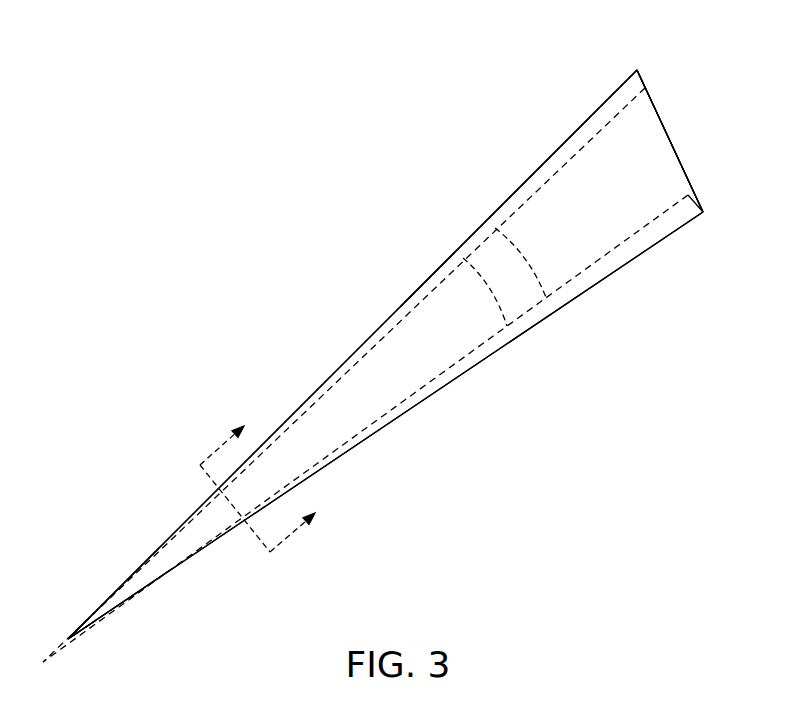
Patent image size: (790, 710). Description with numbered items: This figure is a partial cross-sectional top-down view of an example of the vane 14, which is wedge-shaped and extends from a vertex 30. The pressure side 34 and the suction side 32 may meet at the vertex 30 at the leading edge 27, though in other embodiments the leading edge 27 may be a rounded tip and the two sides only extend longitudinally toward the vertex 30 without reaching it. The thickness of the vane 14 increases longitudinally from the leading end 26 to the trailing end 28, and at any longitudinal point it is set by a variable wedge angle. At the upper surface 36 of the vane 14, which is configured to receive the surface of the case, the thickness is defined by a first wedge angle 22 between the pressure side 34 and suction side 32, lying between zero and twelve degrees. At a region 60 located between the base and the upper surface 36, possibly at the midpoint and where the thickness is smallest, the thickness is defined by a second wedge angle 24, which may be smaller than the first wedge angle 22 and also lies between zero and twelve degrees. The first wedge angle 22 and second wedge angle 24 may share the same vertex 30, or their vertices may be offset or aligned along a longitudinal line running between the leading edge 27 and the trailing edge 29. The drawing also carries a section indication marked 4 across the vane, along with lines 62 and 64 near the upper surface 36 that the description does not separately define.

The section line 4- 4 is at (264, 480).
The vane 14 is at (329, 326).
The first wedge angle 22 is at (492, 219).
The second wedge angle 24 is at (462, 248).
The leading end 26 is at (76, 630).
The leading edge 27 is at (67, 642).
The trailing end 28 is at (636, 69).
The trailing edge 29 is at (681, 165).
The vertex 30 is at (46, 664).
The suction side 32 is at (303, 403).
The pressure side 34 is at (382, 431).
The upper surface 36 is at (648, 141).
The region 60 is at (431, 279).
The top surface 62 is at (528, 178).
The inner edge line 64 is at (575, 136).